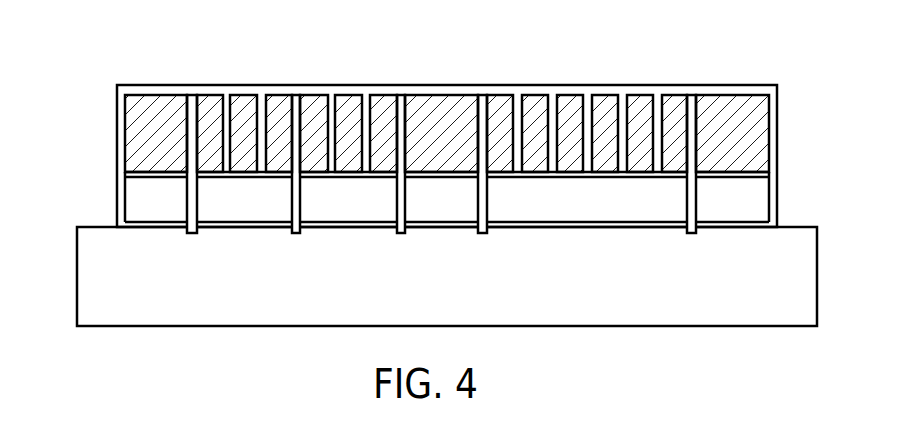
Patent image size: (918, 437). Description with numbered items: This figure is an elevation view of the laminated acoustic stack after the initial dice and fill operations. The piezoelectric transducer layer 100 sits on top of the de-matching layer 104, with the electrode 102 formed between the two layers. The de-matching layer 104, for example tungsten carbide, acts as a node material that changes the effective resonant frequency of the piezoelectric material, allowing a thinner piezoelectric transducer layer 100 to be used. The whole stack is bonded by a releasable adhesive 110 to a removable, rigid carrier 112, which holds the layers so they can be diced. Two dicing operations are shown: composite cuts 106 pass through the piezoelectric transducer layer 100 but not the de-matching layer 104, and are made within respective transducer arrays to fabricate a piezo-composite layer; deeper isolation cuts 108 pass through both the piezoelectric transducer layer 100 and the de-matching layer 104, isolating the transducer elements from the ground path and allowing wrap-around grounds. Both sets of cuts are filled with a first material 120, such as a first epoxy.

The piezoelectric transducer layer 100 is at (163, 112).
The electrode 102 is at (135, 174).
The de-matching layer 104 is at (757, 200).
The composite cuts 106 is at (297, 97).
The isolation cuts 108 is at (402, 95).
The releasable adhesive 110 is at (770, 228).
The carrier 112 is at (90, 278).
The first material 120 is at (222, 93).